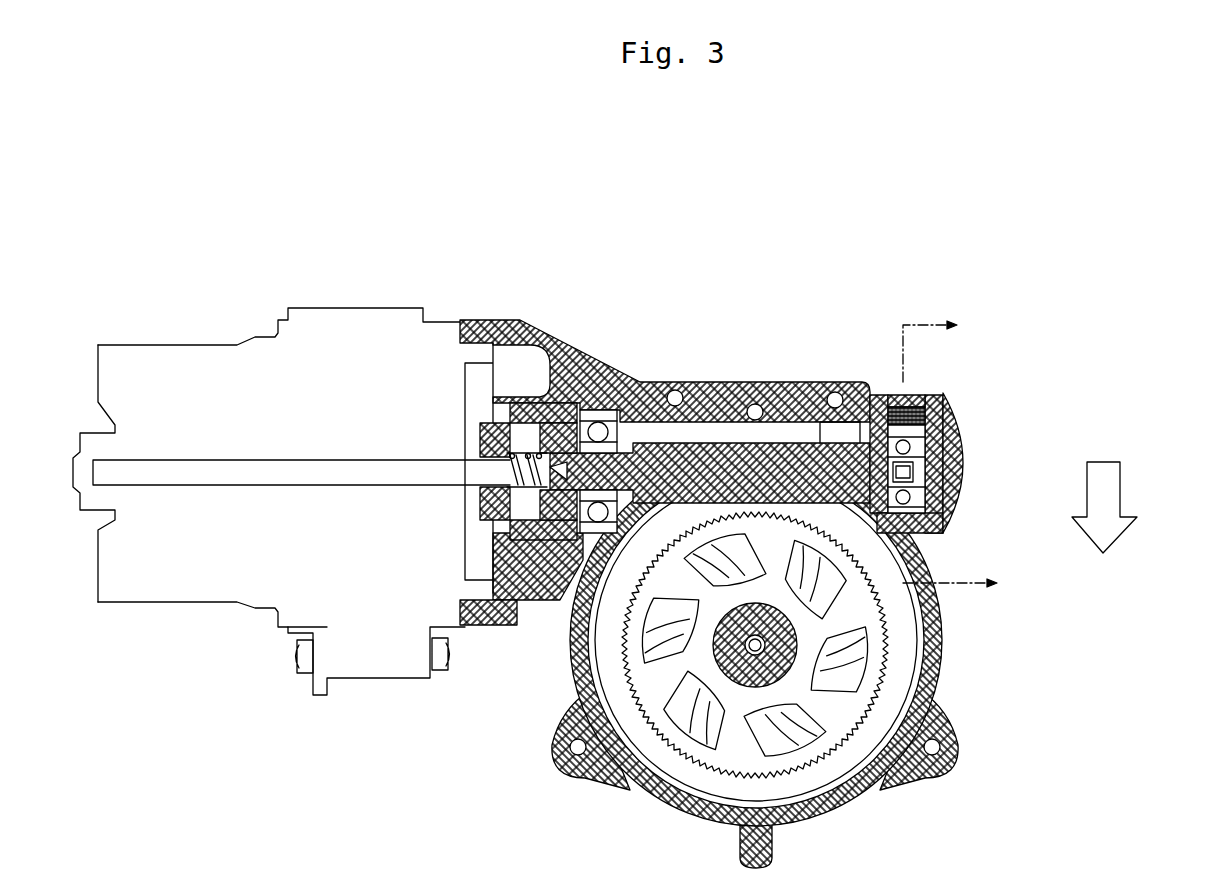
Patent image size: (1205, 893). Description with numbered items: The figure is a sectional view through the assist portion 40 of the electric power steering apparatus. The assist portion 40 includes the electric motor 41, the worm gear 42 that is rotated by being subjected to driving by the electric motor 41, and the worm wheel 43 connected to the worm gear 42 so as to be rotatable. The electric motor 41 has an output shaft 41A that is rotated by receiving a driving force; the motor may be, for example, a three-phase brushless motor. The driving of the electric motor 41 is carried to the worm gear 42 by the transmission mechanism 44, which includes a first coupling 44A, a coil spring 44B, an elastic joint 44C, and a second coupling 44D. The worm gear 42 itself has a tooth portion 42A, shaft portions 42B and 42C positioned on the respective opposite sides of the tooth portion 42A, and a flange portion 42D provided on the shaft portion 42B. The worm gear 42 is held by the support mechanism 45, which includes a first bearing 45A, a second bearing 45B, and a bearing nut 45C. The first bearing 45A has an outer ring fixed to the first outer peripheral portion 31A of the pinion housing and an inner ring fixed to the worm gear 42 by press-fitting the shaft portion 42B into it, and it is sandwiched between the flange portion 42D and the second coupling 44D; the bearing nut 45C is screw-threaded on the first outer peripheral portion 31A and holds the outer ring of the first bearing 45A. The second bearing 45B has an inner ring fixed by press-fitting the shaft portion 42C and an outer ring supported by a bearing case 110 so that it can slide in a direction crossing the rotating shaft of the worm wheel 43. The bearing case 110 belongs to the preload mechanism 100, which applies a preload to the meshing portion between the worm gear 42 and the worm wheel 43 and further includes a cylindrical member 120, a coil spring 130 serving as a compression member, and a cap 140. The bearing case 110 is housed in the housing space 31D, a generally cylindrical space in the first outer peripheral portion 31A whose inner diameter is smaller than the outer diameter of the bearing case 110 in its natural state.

The assist portion 40 is at (282, 188).
The electric motor 41 is at (197, 345).
The output shaft 41A is at (322, 460).
The first outer peripheral portion 31A is at (497, 322).
The worm gear 42 is at (807, 243).
The tooth portion 42A is at (712, 443).
The shaft portion 42B is at (655, 440).
The shaft portion 42C is at (840, 443).
The flange portion 42D is at (612, 408).
The worm wheel 43 is at (841, 764).
The transmission mechanism 44 is at (540, 782).
The first coupling 44A is at (508, 490).
The coil spring 44B is at (520, 480).
The elastic joint 44C is at (540, 490).
The second coupling 44D is at (553, 493).
The support mechanism 45 is at (1048, 625).
The first bearing 45A is at (620, 545).
The second bearing 45B is at (938, 528).
The bearing nut 45C is at (590, 542).
The preload mechanism 100 is at (1048, 348).
The bearing case 110 is at (923, 463).
The cylindrical member 120 is at (922, 425).
The coil spring 130 is at (908, 417).
The cap 140 is at (933, 397).
The housing space 31D is at (913, 500).